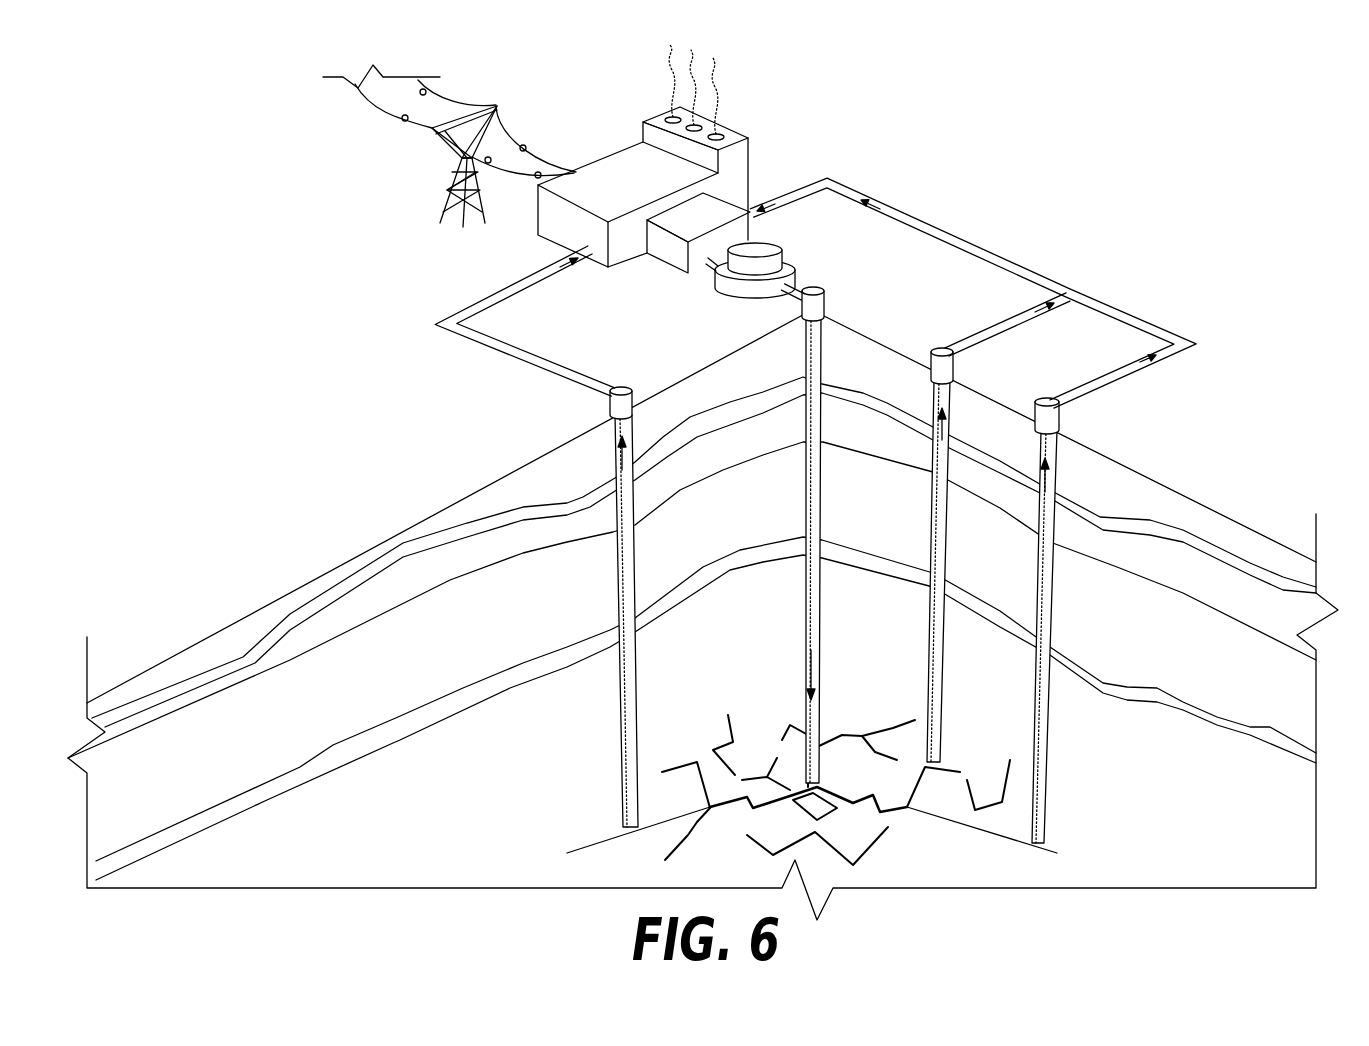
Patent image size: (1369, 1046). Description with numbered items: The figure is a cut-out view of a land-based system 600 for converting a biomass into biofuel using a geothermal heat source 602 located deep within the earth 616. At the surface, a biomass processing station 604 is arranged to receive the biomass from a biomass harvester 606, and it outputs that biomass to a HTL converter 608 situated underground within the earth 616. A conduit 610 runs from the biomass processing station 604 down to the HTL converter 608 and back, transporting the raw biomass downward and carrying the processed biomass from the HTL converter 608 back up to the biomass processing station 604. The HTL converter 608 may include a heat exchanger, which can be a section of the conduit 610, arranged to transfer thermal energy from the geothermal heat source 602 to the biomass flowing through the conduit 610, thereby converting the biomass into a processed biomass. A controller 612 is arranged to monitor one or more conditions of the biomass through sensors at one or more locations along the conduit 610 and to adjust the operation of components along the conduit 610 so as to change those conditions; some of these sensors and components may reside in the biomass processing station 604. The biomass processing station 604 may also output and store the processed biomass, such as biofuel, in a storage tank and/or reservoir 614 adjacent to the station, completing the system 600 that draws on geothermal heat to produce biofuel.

The land-based system 600 is at (141, 77).
The geothermal heat source 602 is at (890, 846).
The biomass processing station 604 is at (623, 173).
The biomass harvester 606 is at (467, 308).
The HTL converter 608 is at (703, 822).
The conduit 610 is at (617, 583).
The controller 612 is at (725, 213).
The storage tank and/or reservoir 614 is at (732, 287).
The earth 616 is at (760, 520).